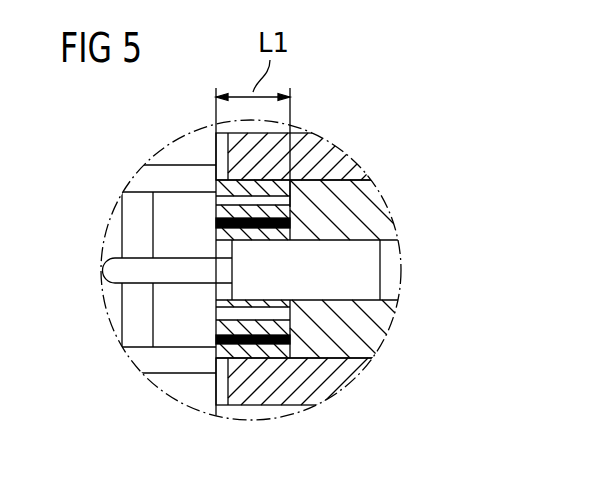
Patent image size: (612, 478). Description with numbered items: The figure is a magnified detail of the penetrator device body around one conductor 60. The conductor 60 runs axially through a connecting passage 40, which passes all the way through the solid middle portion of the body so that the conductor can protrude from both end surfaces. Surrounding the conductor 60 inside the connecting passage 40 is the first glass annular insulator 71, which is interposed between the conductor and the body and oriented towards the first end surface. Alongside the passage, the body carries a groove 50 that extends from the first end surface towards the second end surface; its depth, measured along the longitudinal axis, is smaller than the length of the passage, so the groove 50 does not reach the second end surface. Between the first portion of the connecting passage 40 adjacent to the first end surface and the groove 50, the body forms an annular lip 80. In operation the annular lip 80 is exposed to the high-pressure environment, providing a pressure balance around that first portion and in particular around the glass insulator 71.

The connecting passage 40 is at (222, 295).
The groove 50 is at (292, 222).
The conductor 60 is at (120, 273).
The first glass annular insulator 71 is at (367, 267).
The annular lip 80 is at (290, 241).